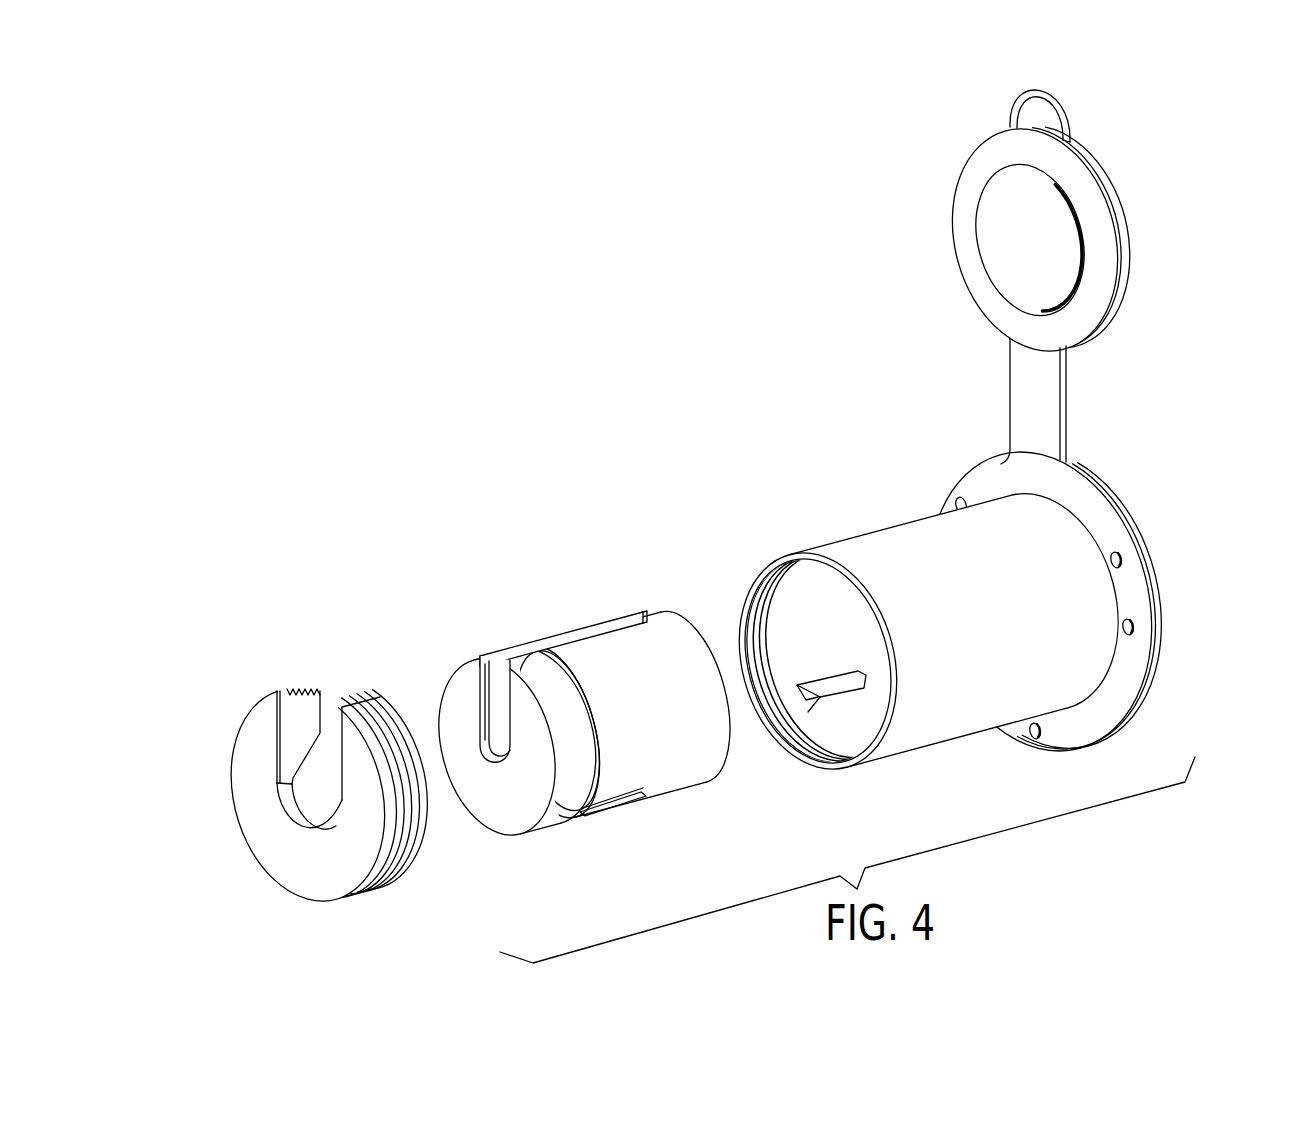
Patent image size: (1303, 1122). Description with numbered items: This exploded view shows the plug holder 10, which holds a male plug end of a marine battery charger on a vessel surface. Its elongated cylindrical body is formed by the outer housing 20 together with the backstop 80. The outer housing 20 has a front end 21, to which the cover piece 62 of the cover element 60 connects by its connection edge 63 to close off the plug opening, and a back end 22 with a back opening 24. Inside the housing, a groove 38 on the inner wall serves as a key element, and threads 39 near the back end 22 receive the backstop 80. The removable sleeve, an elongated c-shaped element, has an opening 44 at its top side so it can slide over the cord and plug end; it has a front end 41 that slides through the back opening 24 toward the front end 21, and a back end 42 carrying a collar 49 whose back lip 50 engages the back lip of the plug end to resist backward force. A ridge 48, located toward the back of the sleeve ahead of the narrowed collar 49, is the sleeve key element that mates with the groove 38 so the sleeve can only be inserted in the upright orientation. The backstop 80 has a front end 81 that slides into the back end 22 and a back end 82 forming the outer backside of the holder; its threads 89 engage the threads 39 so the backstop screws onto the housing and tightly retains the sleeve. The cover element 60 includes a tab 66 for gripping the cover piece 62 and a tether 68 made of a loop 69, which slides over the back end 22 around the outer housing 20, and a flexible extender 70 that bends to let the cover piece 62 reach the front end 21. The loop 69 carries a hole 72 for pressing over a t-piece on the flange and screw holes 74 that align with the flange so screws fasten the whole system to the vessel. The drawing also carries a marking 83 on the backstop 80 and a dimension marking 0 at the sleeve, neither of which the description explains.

The plug holder 10 is at (655, 386).
The outer housing 20 is at (929, 663).
The front end 21 is at (1160, 690).
The back end 22 is at (840, 770).
The back opening 24 is at (799, 670).
The groove 38 is at (820, 690).
The threads 39 is at (822, 758).
The front end 41 is at (618, 752).
The back end 42 is at (520, 721).
The opening 44 is at (583, 637).
The ridge 48 is at (627, 808).
The collar 49 is at (510, 810).
The back lip 50 is at (485, 752).
The cover element 60 is at (1051, 445).
The cover piece 62 is at (1010, 224).
The connection edge 63 is at (1035, 224).
The tab 66 is at (1040, 105).
The tether 68 is at (1048, 395).
The loop 69 is at (1051, 619).
The flexible extender 70 is at (1035, 437).
The hole 72 is at (1132, 640).
The screw holes 74 is at (1120, 560).
The backstop 80 is at (304, 791).
The front end 81 is at (318, 688).
The back end 82 is at (247, 708).
The ring slot 83 is at (292, 808).
The threads 89 is at (410, 845).
The zero gap dimension 0 is at (735, 628).